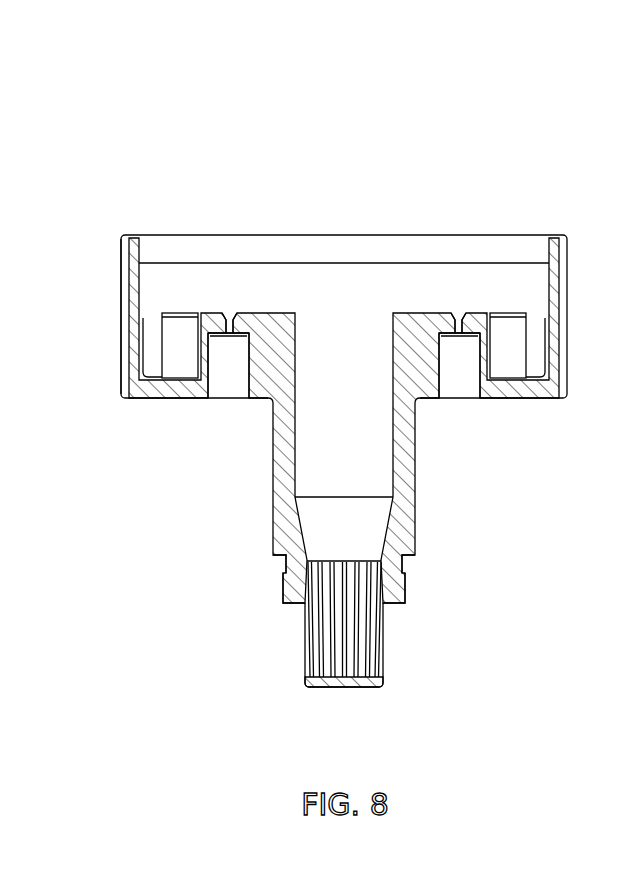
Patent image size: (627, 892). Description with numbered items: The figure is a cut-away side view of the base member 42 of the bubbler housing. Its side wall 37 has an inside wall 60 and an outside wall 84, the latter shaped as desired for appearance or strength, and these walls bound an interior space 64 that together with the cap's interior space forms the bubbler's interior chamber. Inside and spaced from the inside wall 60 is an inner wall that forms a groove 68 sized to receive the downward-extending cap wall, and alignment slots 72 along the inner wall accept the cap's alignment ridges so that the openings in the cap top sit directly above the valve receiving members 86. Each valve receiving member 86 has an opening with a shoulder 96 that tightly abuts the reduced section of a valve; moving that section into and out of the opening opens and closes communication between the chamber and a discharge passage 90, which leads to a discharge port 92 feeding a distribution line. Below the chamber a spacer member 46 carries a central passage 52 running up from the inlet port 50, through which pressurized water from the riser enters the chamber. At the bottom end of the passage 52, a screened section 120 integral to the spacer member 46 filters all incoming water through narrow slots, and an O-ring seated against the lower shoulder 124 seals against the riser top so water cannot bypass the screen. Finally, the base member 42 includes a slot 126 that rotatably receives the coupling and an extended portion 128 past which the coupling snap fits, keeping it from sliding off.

The base member 42 is at (465, 113).
The side wall 37 is at (119, 296).
The spacer member 46 is at (405, 532).
The inlet port 50 is at (343, 688).
The passage 52 is at (333, 481).
The inside wall 60 is at (552, 250).
The interior space 64 is at (343, 297).
The groove 68 is at (535, 357).
The alignment slots 72 is at (178, 313).
The outside wall 84 is at (560, 293).
The valve receiving member 86 is at (458, 310).
The discharge passage 90 is at (237, 375).
The discharge port 92 is at (451, 375).
The shoulder 96 is at (232, 313).
The screened section 120 is at (337, 657).
The lower shoulder 124 is at (387, 602).
The slot 126 is at (290, 561).
The extended portion 128 is at (300, 583).